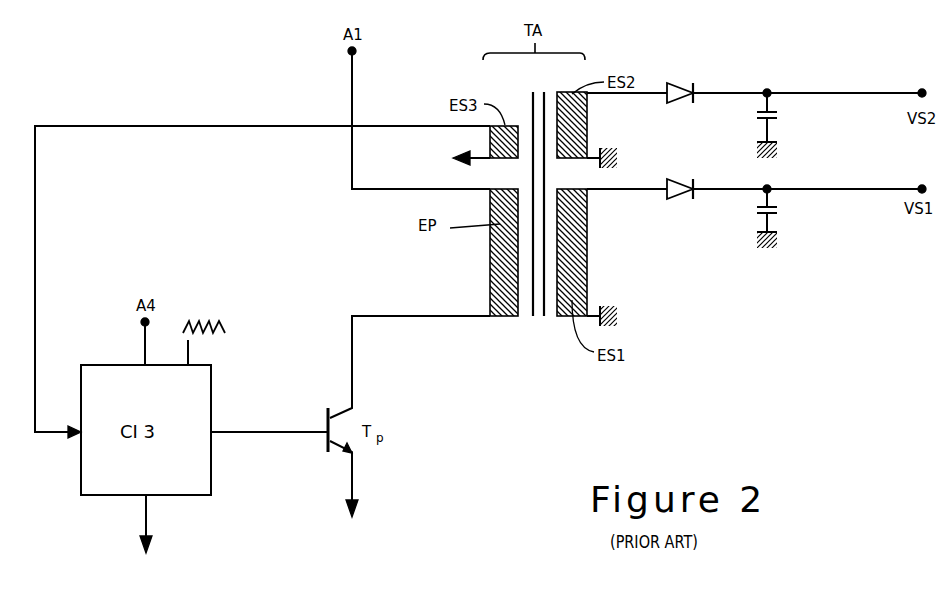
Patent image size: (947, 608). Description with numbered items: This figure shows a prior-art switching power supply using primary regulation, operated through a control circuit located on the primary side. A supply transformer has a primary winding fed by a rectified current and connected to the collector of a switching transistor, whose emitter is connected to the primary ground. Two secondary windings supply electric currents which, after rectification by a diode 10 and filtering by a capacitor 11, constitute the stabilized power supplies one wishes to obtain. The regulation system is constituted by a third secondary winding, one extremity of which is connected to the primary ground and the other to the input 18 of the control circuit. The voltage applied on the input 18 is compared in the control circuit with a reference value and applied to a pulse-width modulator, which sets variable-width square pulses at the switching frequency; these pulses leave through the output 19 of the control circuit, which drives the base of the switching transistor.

The rectifier diode 10 is at (668, 193).
The filter capacitor 11 is at (757, 214).
The input of the circuit CI3 18 is at (80, 441).
The output of the circuit CI3 19 is at (211, 433).